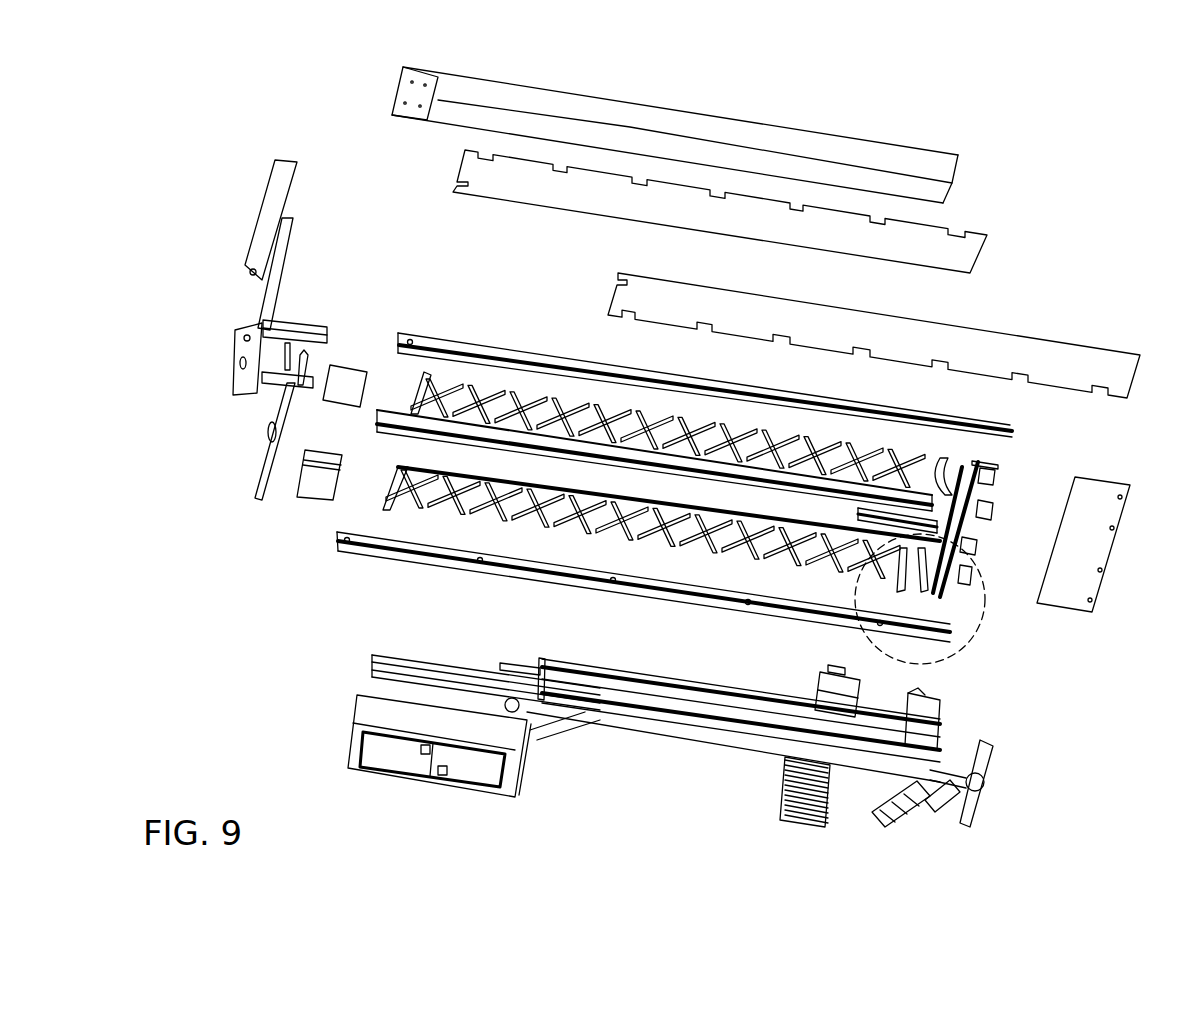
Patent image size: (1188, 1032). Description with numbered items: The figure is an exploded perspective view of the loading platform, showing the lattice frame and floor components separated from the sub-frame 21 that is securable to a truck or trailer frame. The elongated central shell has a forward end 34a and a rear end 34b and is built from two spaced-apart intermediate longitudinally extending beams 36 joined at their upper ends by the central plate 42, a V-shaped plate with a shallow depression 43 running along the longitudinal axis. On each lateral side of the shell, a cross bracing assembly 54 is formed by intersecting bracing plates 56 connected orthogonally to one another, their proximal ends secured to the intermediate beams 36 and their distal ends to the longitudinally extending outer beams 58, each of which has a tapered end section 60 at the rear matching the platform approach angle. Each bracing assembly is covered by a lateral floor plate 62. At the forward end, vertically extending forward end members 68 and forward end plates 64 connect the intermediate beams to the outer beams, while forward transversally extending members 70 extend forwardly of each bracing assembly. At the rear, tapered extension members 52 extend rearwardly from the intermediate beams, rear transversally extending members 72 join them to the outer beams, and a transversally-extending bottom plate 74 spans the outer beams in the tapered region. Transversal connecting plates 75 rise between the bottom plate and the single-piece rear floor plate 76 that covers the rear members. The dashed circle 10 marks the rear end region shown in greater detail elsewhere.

The end coupling assembly 10 is at (975, 635).
The sub-frame 21 is at (659, 808).
The forward end 34a is at (366, 419).
The rear end 34b is at (945, 456).
The intermediate longitudinally extending beams 36 is at (425, 428).
The central plate 42 is at (940, 190).
The depression 43 is at (935, 160).
The tapered extension members 52 is at (983, 488).
The cross bracing assemblies 54 is at (740, 420).
The intersecting bracing plates 56 is at (793, 435).
The longitudinally extending outer beams 58 is at (886, 416).
The tapered end section 60 is at (972, 428).
The lateral floor plates 62 is at (967, 253).
The forward end plates 64 is at (348, 380).
The vertically extending forward end members 68 is at (280, 400).
The forward transversally extending members 70 is at (412, 375).
The rear transversally extending members 72 is at (985, 467).
The transversally-extending bottom plate 74 is at (976, 545).
The transversal connecting plates 75 is at (984, 516).
The rear floor plate 76 is at (1105, 537).